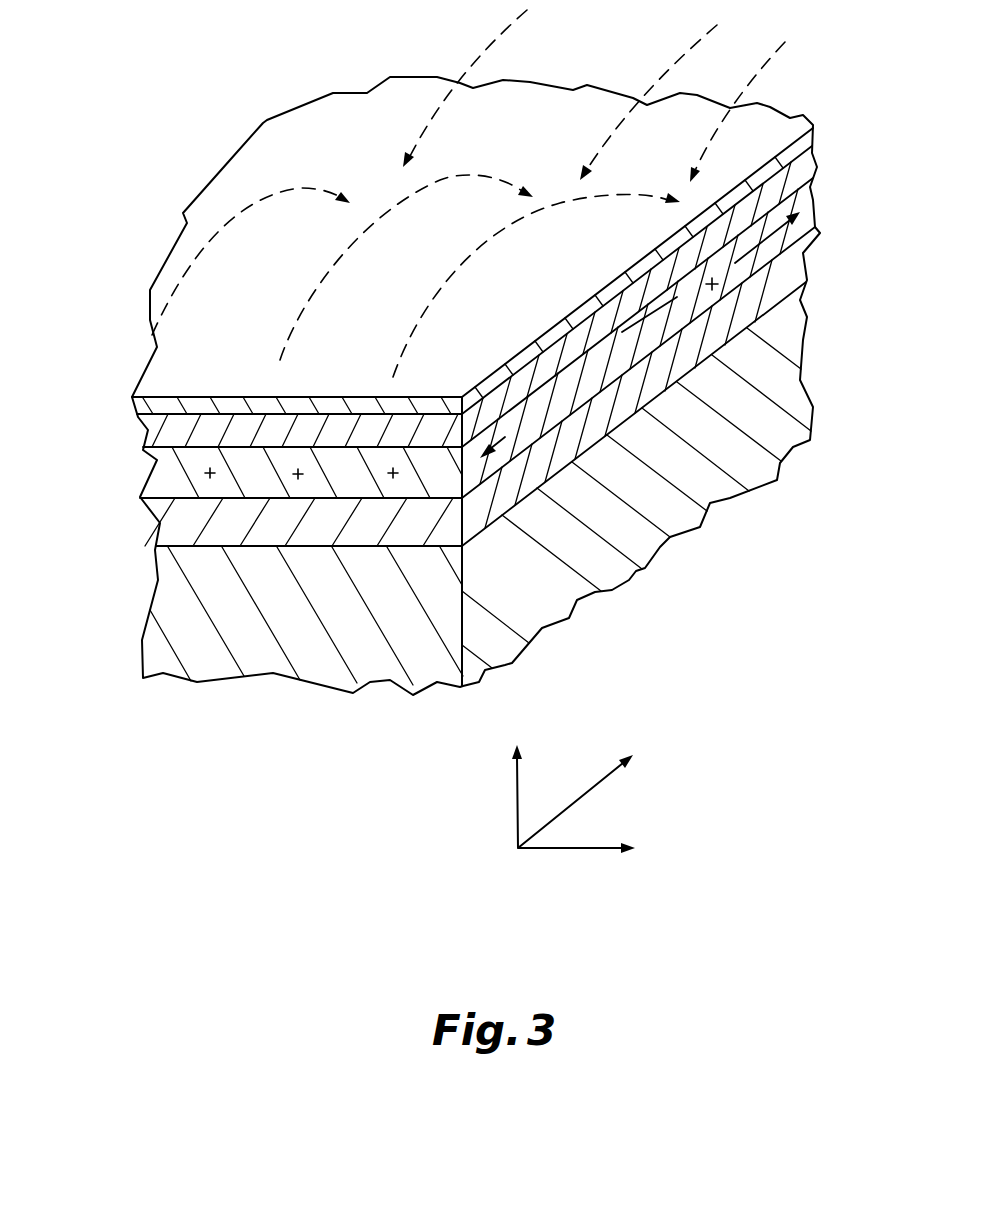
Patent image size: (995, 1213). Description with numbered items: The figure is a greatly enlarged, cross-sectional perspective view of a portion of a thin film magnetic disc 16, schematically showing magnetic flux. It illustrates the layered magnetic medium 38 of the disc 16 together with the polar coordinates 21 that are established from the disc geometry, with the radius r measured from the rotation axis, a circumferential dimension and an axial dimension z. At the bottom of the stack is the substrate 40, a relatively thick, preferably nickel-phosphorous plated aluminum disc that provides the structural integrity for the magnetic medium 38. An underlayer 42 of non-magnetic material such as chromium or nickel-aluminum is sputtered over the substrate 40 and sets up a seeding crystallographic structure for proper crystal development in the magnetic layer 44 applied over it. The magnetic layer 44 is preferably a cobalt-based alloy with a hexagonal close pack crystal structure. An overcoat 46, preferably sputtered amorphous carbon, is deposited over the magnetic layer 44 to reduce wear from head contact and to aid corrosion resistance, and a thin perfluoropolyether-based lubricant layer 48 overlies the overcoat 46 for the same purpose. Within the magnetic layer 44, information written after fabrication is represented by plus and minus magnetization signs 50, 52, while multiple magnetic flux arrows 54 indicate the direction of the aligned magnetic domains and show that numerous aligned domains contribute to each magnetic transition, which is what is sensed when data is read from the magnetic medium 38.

The disc 16 is at (88, 212).
The polar coordinates 21 is at (517, 798).
The magnetic medium 38 is at (169, 160).
The substrate 40 is at (219, 666).
The underlayer 42 is at (160, 525).
The magnetic layer 44 is at (160, 458).
The overcoat 46 is at (150, 428).
The lubricant layer 48 is at (160, 403).
The + magnetization sign 50 is at (205, 477).
The − magnetization sign 52 is at (714, 289).
The magnetic flux arrows 54 is at (487, 47).